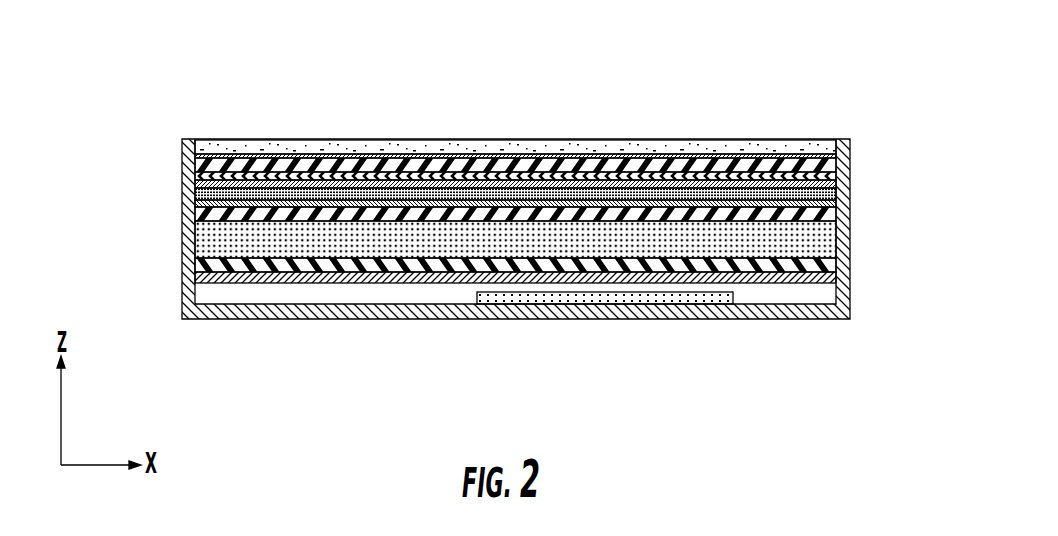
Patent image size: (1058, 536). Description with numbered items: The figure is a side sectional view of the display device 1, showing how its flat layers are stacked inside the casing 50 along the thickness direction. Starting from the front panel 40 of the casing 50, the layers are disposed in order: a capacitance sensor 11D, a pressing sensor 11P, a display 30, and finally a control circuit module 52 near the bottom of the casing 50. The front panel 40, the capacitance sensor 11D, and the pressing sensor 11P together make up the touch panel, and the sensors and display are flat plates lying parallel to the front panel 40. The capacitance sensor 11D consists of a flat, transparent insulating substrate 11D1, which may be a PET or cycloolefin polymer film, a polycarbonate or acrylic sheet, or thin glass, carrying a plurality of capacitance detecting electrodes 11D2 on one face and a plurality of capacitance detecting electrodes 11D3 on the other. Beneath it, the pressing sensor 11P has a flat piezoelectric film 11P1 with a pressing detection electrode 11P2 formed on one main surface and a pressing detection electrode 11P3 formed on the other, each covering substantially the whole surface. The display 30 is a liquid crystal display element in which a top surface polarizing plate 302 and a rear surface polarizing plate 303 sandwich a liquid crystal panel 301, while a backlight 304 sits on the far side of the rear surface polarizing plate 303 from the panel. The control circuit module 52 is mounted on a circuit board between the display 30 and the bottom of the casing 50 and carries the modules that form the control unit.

The display device 1 is at (787, 90).
The front panel 40 is at (288, 140).
The capacitance sensor 11D is at (440, 139).
The insulating substrate 11D1 is at (195, 165).
The capacitance detecting electrodes 11D2 is at (195, 156).
The capacitance detecting electrodes 11D3 is at (195, 176).
The pressing sensor 11P is at (440, 226).
The piezoelectric film 11P1 is at (195, 194).
The pressing detection electrode 11P2 is at (195, 184).
The pressing detection electrode 11P3 is at (195, 204).
The display 30 is at (576, 242).
The liquid crystal panel 301 is at (827, 243).
The top surface polarizing plate 302 is at (832, 214).
The rear surface polarizing plate 303 is at (832, 268).
The backlight 304 is at (555, 288).
The casing 50 is at (780, 313).
The control circuit module 52 is at (682, 298).